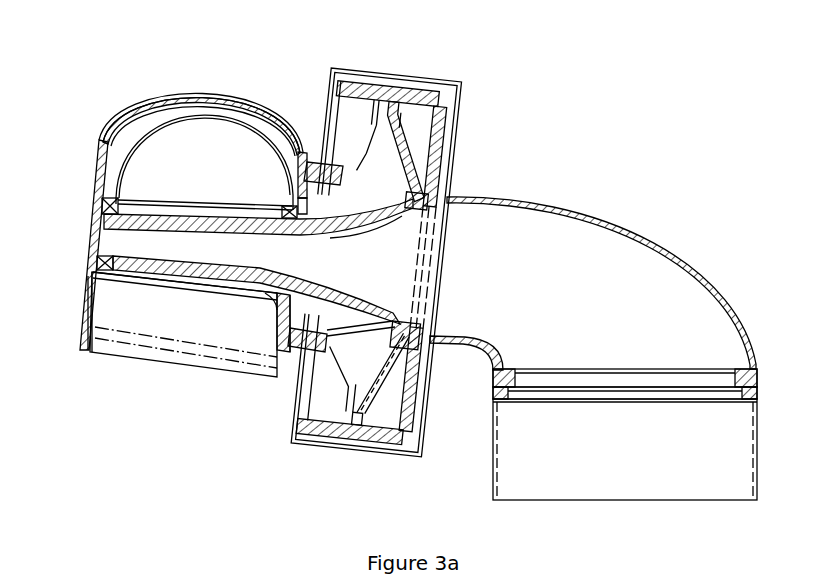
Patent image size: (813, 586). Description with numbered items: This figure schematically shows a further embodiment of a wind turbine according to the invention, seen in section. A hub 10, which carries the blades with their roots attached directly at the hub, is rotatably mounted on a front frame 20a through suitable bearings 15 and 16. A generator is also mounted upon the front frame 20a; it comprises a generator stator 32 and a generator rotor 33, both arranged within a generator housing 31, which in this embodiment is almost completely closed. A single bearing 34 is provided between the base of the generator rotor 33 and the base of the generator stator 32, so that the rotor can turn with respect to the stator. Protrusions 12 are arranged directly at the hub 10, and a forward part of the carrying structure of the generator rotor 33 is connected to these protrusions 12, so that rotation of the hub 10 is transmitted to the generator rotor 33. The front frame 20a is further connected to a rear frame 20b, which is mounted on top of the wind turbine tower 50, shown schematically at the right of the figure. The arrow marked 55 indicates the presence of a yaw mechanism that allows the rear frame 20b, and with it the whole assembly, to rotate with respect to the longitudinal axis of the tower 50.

The hub 10 is at (110, 313).
The protrusions 12 is at (327, 160).
The bearing 15 is at (92, 207).
The bearing 16 is at (270, 297).
The front frame 20a is at (128, 252).
The rear frame 20b is at (640, 238).
The generator housing 31 is at (457, 143).
The generator stator 32 is at (463, 113).
The generator rotor 33 is at (365, 108).
The bearing 34 is at (453, 192).
The wind turbine tower 50 is at (493, 460).
The yaw mechanism 55 is at (770, 388).